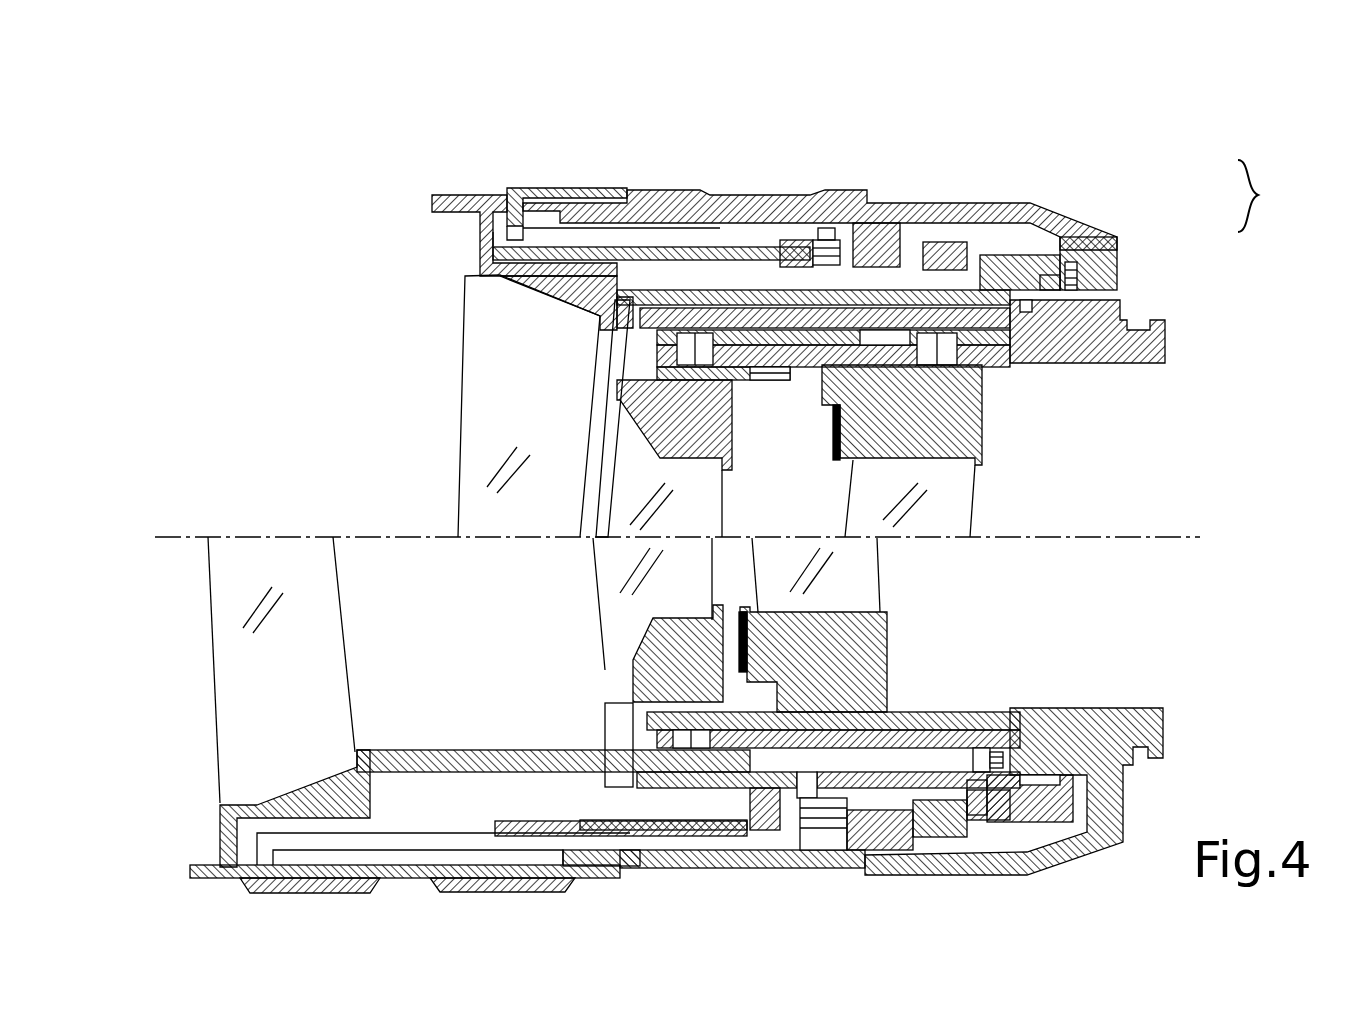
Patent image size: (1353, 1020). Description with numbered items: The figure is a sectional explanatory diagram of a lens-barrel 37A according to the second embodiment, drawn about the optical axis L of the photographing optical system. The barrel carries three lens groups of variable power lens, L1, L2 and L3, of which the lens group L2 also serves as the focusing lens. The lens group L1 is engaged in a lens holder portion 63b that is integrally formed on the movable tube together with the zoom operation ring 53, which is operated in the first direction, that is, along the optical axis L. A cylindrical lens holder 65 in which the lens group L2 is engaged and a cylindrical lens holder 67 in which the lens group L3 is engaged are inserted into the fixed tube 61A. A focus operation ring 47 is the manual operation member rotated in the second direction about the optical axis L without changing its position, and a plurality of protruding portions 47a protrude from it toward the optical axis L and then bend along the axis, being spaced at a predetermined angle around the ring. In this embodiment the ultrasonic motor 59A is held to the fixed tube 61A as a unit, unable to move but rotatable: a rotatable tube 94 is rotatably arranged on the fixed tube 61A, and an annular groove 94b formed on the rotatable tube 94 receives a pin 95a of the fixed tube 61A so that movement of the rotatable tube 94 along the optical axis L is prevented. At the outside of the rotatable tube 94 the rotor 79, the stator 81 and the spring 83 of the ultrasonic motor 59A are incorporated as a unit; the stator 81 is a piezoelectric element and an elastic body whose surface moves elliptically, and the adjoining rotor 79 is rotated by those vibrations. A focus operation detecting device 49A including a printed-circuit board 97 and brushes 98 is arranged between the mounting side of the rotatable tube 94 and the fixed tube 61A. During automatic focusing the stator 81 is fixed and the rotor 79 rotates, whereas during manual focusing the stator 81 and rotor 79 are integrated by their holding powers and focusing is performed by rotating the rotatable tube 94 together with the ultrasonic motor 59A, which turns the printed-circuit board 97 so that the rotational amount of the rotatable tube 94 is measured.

The lens-barrel 37A is at (1205, 110).
The focus operation ring 47 is at (553, 190).
The protruding portions 47a is at (512, 222).
The zoom operation ring 53 is at (750, 198).
The lens holder portion 63b is at (470, 236).
The rotor 79 is at (892, 235).
The stator 81 is at (945, 245).
The ultrasonic motor 59A is at (956, 248).
The spring 83 is at (985, 250).
The rotatable tube 94 is at (1013, 263).
The annular groove 94b is at (1057, 252).
The brushes 98 is at (1075, 260).
The printed-circuit board 97 is at (1105, 290).
The focus operation detecting device 49A is at (1295, 196).
The fixed tube 61A is at (1147, 365).
The pin 95a is at (1030, 312).
The lens holder 65 is at (740, 428).
The lens holder 67 is at (985, 430).
The lens group L1 is at (482, 405).
The lens group L2 is at (700, 487).
The lens group L3 is at (960, 492).
The optical axis L is at (691, 530).